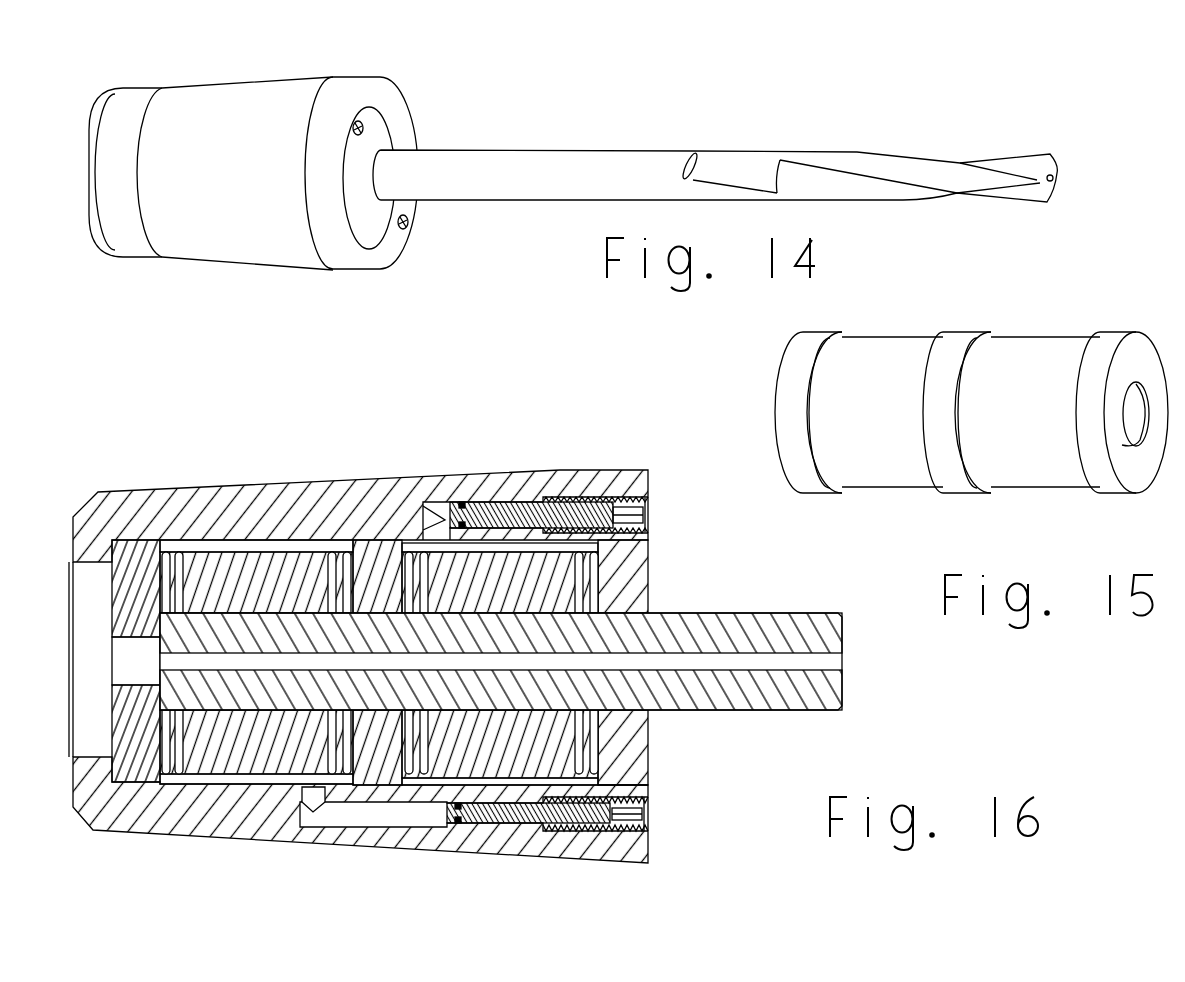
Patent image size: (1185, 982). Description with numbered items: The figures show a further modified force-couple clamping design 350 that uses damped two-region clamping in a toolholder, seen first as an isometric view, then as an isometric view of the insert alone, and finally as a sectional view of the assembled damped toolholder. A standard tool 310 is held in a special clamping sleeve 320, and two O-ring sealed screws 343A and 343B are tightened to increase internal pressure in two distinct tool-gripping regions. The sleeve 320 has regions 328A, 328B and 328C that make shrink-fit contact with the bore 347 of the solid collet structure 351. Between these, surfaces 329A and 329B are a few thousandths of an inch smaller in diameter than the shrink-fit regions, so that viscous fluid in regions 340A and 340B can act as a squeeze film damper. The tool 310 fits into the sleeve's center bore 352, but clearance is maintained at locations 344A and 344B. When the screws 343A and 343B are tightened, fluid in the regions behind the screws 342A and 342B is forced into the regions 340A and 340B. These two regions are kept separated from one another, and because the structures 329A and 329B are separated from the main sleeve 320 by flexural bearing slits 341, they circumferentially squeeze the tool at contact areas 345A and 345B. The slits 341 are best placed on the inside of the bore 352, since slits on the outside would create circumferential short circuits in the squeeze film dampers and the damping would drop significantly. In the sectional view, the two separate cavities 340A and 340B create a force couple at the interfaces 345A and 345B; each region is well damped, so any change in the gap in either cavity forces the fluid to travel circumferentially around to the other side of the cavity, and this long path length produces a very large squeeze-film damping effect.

In FIG. 14, the tool 310 is at (530, 170).
In FIG. 16, the tool 310 is at (842, 680).
In FIG. 14, the clamping sleeve 320 is at (382, 215).
In FIG. 15, the clamping sleeve 320 is at (926, 398).
In FIG. 15, the region of sleeve 328A is at (788, 427).
In FIG. 16, the region of sleeve 328A is at (135, 757).
In FIG. 15, the region of sleeve 328B is at (962, 340).
In FIG. 16, the region of sleeve 328B is at (387, 770).
In FIG. 15, the region of sleeve 328C is at (1108, 336).
In FIG. 16, the region of sleeve 328C is at (632, 762).
In FIG. 15, the surface 329A is at (888, 458).
In FIG. 16, the surface 329A is at (245, 753).
In FIG. 15, the surface 329B is at (1017, 443).
In FIG. 16, the surface 329B is at (543, 740).
In FIG. 16, the region 340A is at (252, 546).
In FIG. 16, the region 340B is at (523, 550).
In FIG. 16, the flexural bearing slits 341 is at (178, 743).
In FIG. 16, the region behind screw 342A is at (337, 810).
In FIG. 16, the region behind screw 342B is at (437, 520).
In FIG. 14, the screw 343A is at (362, 127).
In FIG. 16, the screw 343A is at (644, 522).
In FIG. 14, the screw 343B is at (406, 226).
In FIG. 16, the screw 343B is at (644, 813).
In FIG. 16, the location 344A is at (650, 735).
In FIG. 16, the location 344B is at (388, 768).
In FIG. 16, the contact area 345A is at (277, 605).
In FIG. 16, the contact area 345B is at (646, 593).
In FIG. 16, the bore 347 is at (225, 550).
In FIG. 14, the force-couple clamping design 350 is at (420, 105).
In FIG. 16, the force-couple clamping design 350 is at (122, 483).
In FIG. 16, the solid collet structure 351 is at (100, 513).
In FIG. 15, the center bore 352 is at (1137, 420).